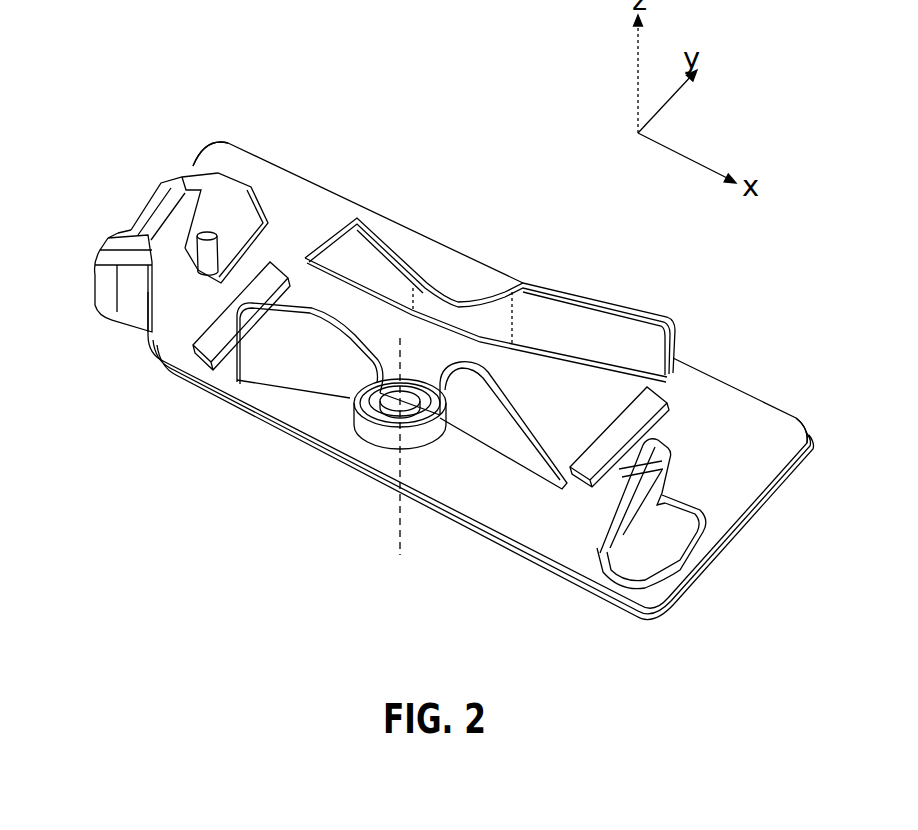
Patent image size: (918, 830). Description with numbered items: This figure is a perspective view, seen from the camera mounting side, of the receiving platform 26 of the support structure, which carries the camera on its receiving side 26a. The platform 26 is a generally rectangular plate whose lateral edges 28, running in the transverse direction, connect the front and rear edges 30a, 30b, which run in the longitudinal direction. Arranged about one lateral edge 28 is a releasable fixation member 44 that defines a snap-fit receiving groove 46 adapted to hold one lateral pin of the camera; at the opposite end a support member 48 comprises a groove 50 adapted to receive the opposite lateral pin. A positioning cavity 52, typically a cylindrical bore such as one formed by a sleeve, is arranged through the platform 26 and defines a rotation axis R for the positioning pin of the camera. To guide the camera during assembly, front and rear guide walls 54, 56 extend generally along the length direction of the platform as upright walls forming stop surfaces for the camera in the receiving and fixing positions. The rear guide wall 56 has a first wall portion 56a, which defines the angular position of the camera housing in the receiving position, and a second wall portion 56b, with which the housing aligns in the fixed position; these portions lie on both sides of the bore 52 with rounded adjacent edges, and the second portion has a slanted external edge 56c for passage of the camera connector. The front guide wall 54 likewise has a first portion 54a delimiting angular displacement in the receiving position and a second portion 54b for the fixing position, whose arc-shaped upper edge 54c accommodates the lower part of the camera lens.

The receiving platform 26 is at (760, 325).
The receiving side 26a is at (412, 243).
The lateral edges 28 is at (193, 163).
The front edge 30a is at (766, 398).
The rear edge 30b is at (513, 546).
The releasable fixation member 44 is at (120, 203).
The snap-fit receiving groove 46 is at (178, 276).
The support member 48 is at (592, 524).
The groove 50 is at (660, 505).
The positioning cavity 52 is at (380, 400).
The front guide wall 54 is at (575, 272).
The first portion of front guide wall 54a is at (618, 327).
The second portion of front guide wall 54b is at (336, 252).
The upper edge of second wall portion 54c is at (427, 285).
The rear guide wall 56 is at (343, 437).
The first wall portion of rear guide wall 56a is at (252, 360).
The second wall portion of rear guide wall 56b is at (452, 432).
The slanted external edge 56c is at (540, 463).
The rotation axis R is at (398, 500).